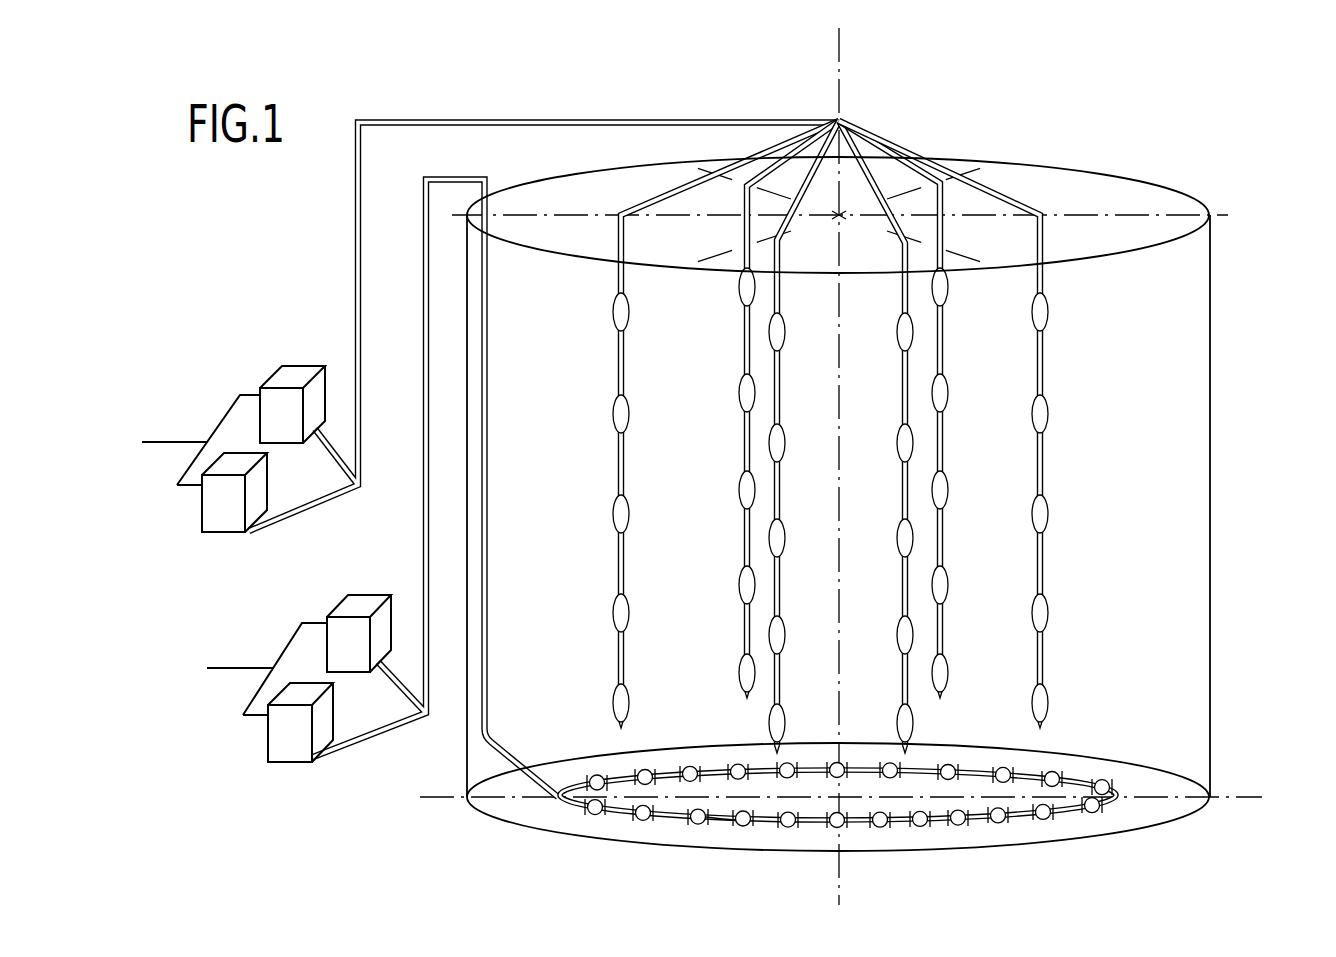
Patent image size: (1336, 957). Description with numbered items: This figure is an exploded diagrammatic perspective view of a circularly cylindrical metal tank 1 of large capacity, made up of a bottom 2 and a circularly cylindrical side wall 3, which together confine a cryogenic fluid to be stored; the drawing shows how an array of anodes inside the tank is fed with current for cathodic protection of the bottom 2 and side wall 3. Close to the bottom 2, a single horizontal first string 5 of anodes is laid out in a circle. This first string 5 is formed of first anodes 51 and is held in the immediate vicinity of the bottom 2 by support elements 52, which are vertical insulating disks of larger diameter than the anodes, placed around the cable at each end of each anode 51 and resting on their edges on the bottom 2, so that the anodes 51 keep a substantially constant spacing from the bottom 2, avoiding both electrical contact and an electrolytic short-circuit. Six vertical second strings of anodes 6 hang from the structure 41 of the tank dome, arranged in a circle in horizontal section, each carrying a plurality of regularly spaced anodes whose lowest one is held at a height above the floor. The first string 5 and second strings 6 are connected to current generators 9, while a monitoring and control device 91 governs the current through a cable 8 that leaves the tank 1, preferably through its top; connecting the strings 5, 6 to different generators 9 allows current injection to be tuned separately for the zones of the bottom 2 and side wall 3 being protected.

The tank 1 is at (1220, 405).
The bottom 2 is at (1130, 823).
The side wall 3 is at (1200, 527).
The structure of the dome 41 is at (1073, 214).
The first string 5 is at (838, 794).
The first anode 51 is at (647, 825).
The support element 52 is at (718, 829).
The second string of anodes 6 is at (1050, 448).
The cable 8 is at (558, 120).
The current generator 9 is at (224, 521).
The monitoring and control device 91 is at (287, 428).